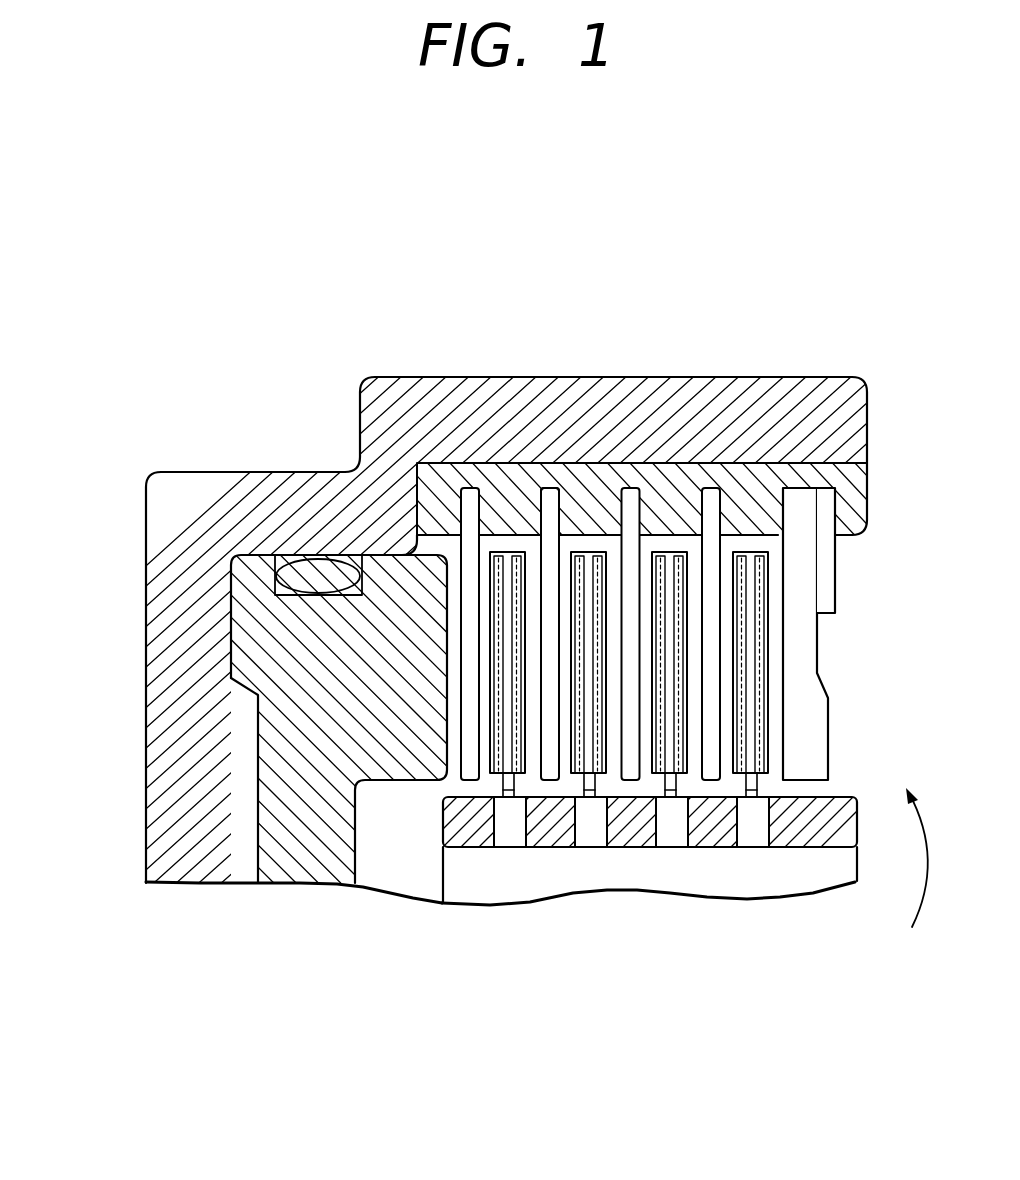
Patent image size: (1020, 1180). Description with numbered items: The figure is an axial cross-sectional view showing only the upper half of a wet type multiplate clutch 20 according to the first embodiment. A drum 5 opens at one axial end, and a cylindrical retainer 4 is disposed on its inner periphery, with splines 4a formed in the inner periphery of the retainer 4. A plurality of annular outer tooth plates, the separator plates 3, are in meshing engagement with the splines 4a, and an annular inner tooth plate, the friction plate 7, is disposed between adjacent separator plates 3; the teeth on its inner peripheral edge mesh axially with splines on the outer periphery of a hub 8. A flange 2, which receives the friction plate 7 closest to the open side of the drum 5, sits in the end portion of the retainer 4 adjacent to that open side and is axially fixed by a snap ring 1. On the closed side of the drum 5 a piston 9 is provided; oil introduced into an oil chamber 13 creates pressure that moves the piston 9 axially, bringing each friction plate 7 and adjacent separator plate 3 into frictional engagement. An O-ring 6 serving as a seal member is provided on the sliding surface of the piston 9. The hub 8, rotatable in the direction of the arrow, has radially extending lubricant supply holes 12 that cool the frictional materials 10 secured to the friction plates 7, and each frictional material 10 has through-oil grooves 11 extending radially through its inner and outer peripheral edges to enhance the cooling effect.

The wet type multiplate clutch 20 is at (593, 272).
The snap ring 1 is at (835, 568).
The flange 2 is at (817, 643).
The separator plates 3 is at (630, 490).
The retainer 4 is at (452, 463).
The splines 4a is at (560, 495).
The drum 5 is at (288, 478).
The O-ring 6 is at (277, 572).
The friction plate 7 is at (786, 781).
The hub 8 is at (818, 883).
The piston 9 is at (308, 857).
The frictional materials 10 is at (768, 548).
The through-oil grooves 11 is at (683, 773).
The lubricant supply holes 12 is at (507, 840).
The oil chamber 13 is at (240, 805).